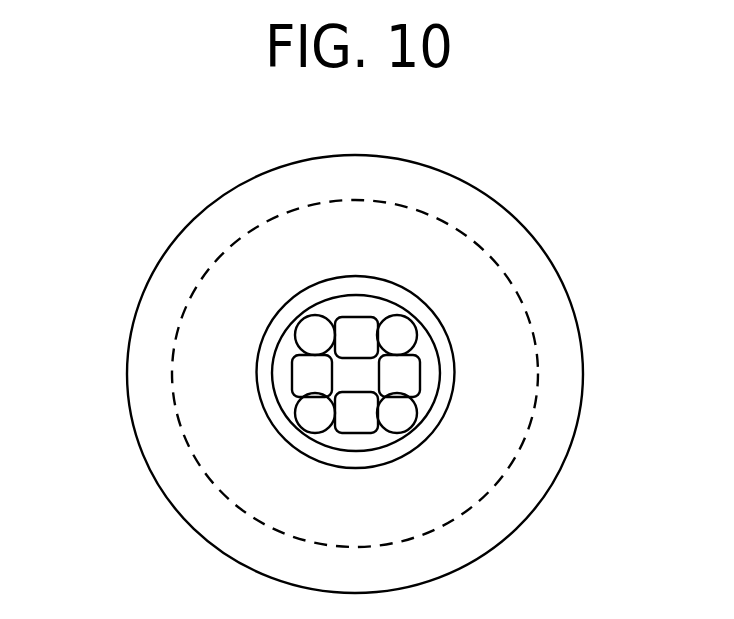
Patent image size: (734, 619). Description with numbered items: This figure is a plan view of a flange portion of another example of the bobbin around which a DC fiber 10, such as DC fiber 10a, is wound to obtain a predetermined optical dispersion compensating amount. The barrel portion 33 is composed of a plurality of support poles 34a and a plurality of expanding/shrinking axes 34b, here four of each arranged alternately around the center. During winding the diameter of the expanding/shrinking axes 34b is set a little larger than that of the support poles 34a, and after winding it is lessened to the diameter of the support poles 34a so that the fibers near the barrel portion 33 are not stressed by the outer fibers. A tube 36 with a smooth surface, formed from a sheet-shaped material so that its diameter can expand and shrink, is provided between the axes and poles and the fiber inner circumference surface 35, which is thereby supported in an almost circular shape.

The DC fiber 10 is at (550, 240).
The DC fiber 10a is at (215, 455).
The barrel portion 33 is at (403, 455).
The support pole 34a is at (419, 395).
The expanding/shrinking axis 34b is at (413, 338).
The fiber inner circumference surface 35 is at (283, 337).
The tube 36 is at (488, 307).